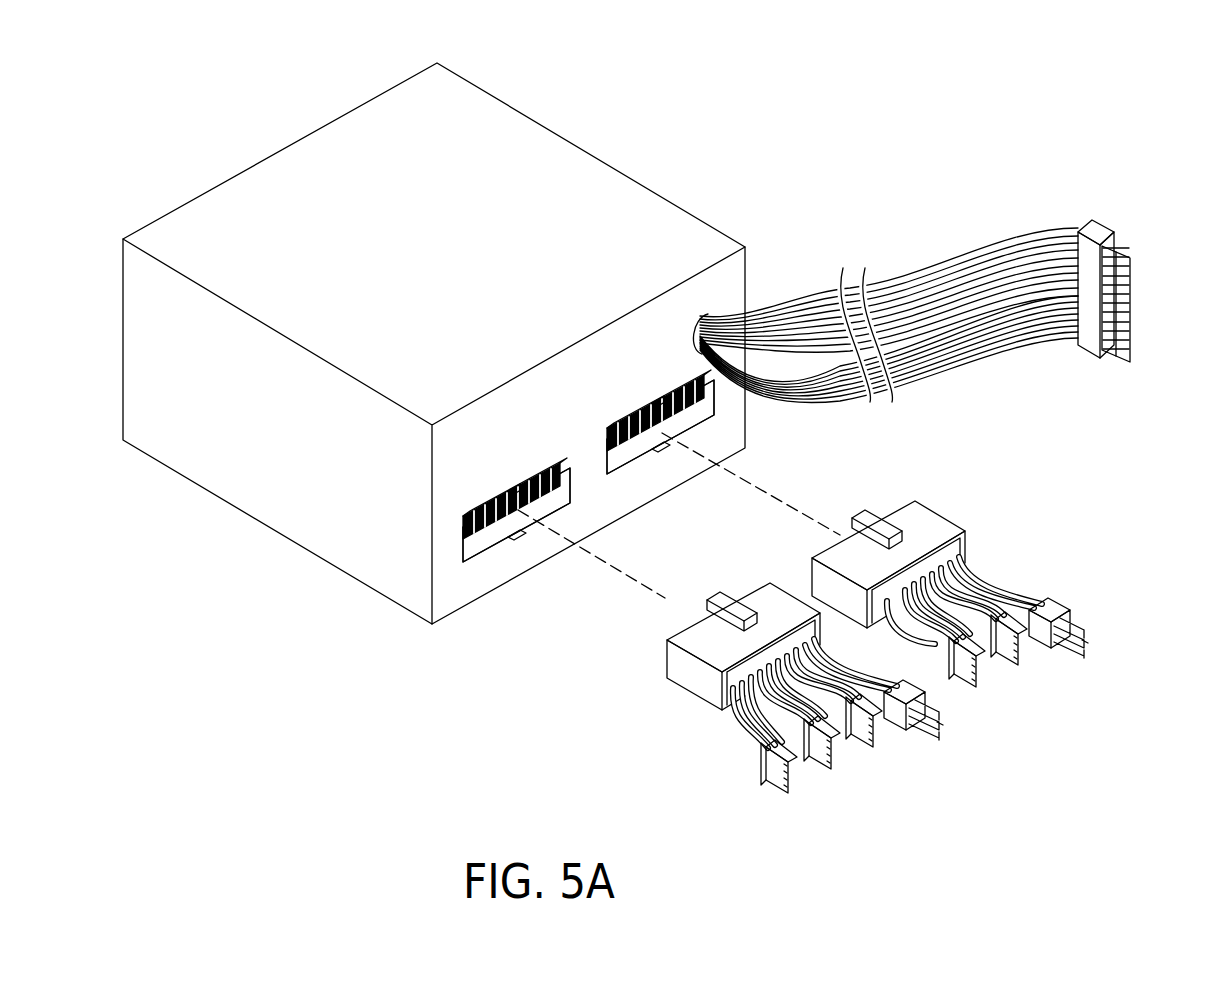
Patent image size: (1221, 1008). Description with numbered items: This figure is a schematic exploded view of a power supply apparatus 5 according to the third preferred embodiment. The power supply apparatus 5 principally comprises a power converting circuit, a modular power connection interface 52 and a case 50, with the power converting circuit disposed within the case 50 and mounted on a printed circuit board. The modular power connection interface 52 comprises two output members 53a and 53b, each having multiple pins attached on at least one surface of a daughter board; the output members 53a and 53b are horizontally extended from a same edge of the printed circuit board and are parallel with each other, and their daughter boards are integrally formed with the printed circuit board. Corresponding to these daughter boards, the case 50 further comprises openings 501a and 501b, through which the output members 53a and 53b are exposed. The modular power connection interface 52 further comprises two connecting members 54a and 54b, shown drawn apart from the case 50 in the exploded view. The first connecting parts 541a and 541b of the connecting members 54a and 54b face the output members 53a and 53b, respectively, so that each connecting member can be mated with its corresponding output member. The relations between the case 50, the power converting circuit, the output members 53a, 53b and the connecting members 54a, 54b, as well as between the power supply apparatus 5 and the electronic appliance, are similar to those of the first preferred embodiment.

The power supply apparatus 5 is at (1168, 83).
The case 50 is at (498, 130).
The opening 501a is at (563, 466).
The opening 501b is at (706, 382).
The modular power connection interface 52 is at (612, 747).
The output member 53a is at (484, 552).
The output member 53b is at (620, 472).
The connecting member 54a is at (660, 689).
The connecting member 54b is at (806, 547).
The first connecting part 541a is at (703, 675).
The first connecting part 541b is at (927, 538).